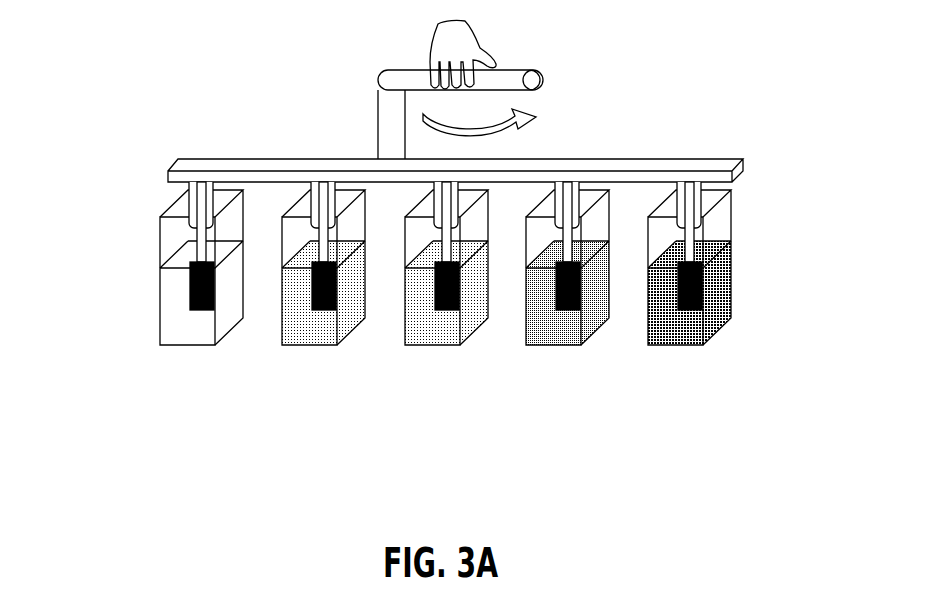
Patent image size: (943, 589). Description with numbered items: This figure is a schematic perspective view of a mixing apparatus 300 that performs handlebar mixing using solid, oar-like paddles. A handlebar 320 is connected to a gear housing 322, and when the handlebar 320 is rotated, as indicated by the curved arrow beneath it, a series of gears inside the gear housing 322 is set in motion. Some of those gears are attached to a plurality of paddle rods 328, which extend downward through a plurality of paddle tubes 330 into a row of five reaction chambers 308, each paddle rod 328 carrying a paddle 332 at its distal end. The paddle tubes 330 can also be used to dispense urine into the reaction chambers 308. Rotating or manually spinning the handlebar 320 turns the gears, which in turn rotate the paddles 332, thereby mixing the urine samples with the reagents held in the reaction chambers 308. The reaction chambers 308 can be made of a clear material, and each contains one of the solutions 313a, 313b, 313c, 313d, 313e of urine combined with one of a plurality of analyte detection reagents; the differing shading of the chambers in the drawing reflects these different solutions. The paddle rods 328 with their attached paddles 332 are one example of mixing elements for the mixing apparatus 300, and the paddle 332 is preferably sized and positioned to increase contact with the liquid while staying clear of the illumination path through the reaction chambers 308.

The mixing apparatus 300 is at (92, 92).
The reaction chambers 308 is at (722, 403).
The solution 313a is at (745, 283).
The solution 313b is at (555, 345).
The solution 313c is at (433, 335).
The solution 313d is at (310, 335).
The solution 313e is at (166, 287).
The handlebar 320 is at (532, 70).
The gear housing 322 is at (648, 168).
The paddle rods 328 is at (731, 236).
The paddle tubes 330 is at (703, 205).
The paddle 332 is at (190, 288).